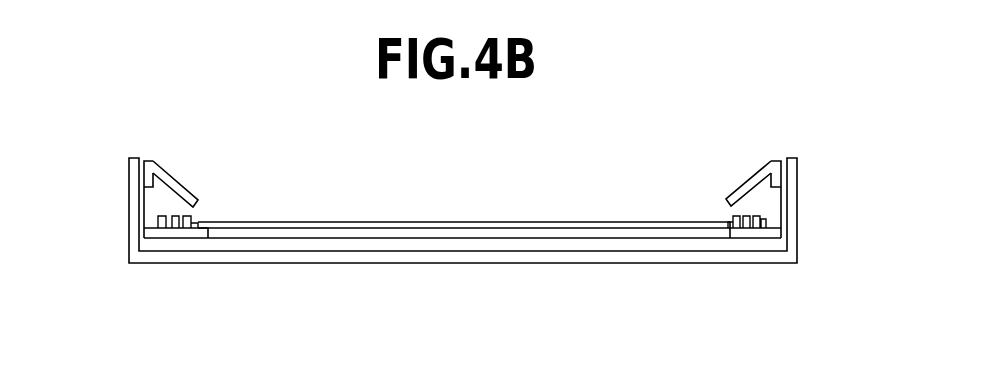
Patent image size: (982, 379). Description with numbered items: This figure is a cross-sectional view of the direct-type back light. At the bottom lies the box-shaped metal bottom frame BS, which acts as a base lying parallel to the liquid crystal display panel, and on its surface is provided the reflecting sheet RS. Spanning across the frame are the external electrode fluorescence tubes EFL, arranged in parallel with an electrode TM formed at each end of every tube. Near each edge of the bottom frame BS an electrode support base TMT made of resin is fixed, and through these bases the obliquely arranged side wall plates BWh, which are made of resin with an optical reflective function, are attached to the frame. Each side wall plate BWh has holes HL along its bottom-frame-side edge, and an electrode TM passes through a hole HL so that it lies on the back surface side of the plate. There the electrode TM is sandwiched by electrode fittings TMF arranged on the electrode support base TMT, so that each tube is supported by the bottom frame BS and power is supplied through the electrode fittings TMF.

The bottom frame BS is at (440, 257).
The reflecting sheet RS is at (605, 244).
The external electrode fluorescence tube EFL is at (512, 222).
The electrode fitting TMF is at (162, 217).
The side wall plate BWh is at (172, 174).
The electrode support base TMT is at (148, 231).
The electrode TM is at (188, 223).
The hole HL is at (203, 210).